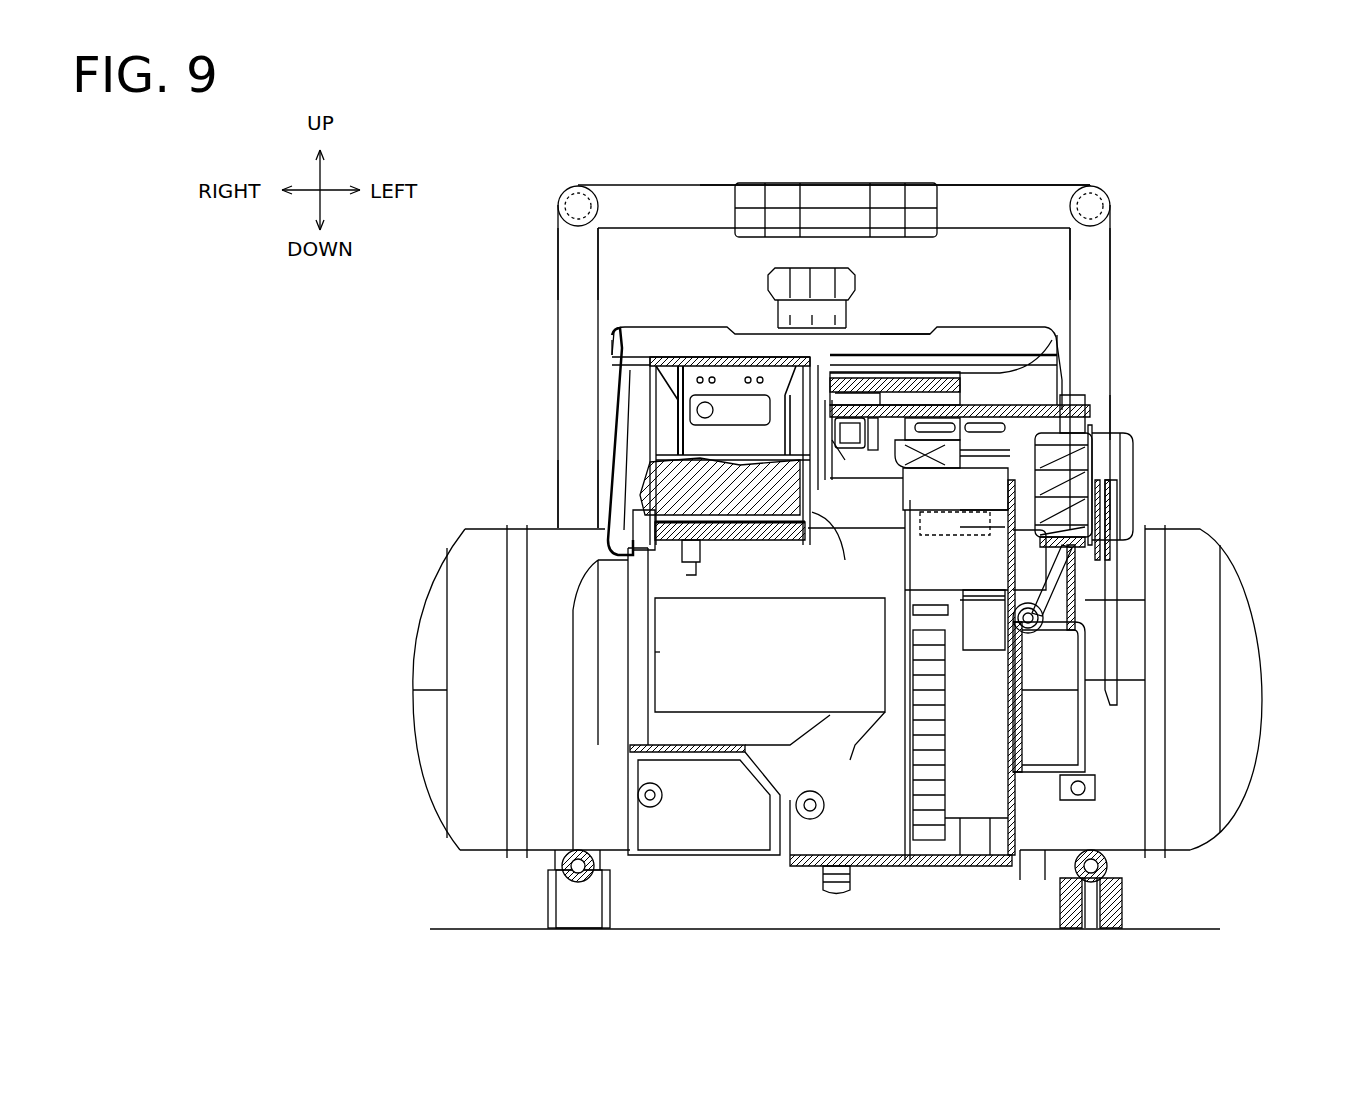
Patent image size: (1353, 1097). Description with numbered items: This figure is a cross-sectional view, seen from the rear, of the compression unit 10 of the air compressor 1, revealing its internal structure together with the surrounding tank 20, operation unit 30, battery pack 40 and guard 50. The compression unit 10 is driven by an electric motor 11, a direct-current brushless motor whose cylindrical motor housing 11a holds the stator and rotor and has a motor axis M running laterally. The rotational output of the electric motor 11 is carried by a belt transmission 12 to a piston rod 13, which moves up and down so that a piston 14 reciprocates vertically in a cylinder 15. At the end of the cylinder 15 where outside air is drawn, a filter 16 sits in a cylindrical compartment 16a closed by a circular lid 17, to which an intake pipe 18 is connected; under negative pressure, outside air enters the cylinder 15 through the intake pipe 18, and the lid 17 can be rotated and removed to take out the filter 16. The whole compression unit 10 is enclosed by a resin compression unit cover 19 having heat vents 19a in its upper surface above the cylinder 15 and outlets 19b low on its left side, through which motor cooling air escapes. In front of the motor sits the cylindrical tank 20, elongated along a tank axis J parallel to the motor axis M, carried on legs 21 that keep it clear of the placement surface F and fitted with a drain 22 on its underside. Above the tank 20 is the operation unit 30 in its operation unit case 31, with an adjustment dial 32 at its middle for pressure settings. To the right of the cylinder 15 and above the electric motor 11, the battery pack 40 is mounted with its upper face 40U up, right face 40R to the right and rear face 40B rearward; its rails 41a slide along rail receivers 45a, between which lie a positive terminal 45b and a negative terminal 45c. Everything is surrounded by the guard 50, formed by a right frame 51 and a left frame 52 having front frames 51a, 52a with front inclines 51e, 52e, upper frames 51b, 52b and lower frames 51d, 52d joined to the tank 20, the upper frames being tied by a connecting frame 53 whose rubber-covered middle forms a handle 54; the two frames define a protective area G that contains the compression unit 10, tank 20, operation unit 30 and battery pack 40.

The air compressor 1 is at (1178, 183).
The compression unit 10 is at (1060, 580).
The electric motor 11 is at (722, 760).
The motor housing 11a is at (580, 690).
The belt transmission 12 is at (935, 845).
The piston rod 13 is at (982, 760).
The piston 14 is at (1135, 513).
The cylinder 15 is at (1080, 545).
The filter 16 is at (1094, 446).
The compartment 16a is at (1085, 400).
The lid 17 is at (1130, 490).
The intake pipe 18 is at (1120, 635).
The compression unit cover 19 is at (985, 405).
The heat vents 19a is at (960, 420).
The outlets 19b is at (1080, 775).
The tank 20 is at (475, 555).
The legs 21 is at (540, 893).
The drain 22 is at (848, 882).
The operation unit 30 is at (930, 310).
The operation unit case 31 is at (678, 345).
The adjustment dial 32 is at (818, 285).
The battery pack 40 is at (648, 355).
The upper face 40U is at (725, 355).
The right face 40R is at (630, 405).
The rear face 40B is at (705, 435).
The rails 41a is at (642, 495).
The rail receivers 45a is at (650, 468).
The positive terminal 45b is at (690, 545).
The negative terminal 45c is at (722, 690).
The guard 50 is at (1120, 243).
The right frame 51 is at (570, 290).
The front frame 51a is at (555, 503).
The upper frame 51b is at (578, 192).
The lower frame 51d is at (610, 872).
The front incline 51e is at (580, 255).
The left frame 52 is at (1100, 305).
The front frame 52a is at (1105, 413).
The upper frame 52b is at (1095, 192).
The lower frame 52d is at (1045, 865).
The front incline 52e is at (1095, 283).
The connecting frame 53 is at (1020, 200).
The handle 54 is at (915, 195).
The protective area G is at (890, 300).
The motor axis M is at (655, 652).
The tank axis J is at (430, 690).
The placement surface F is at (1210, 929).